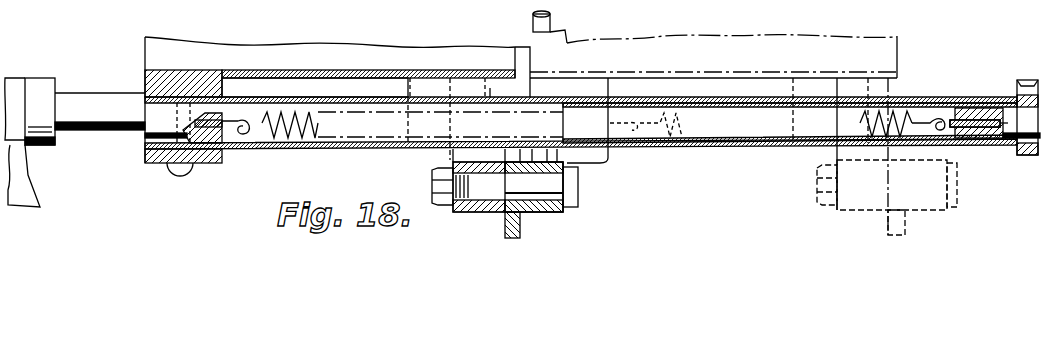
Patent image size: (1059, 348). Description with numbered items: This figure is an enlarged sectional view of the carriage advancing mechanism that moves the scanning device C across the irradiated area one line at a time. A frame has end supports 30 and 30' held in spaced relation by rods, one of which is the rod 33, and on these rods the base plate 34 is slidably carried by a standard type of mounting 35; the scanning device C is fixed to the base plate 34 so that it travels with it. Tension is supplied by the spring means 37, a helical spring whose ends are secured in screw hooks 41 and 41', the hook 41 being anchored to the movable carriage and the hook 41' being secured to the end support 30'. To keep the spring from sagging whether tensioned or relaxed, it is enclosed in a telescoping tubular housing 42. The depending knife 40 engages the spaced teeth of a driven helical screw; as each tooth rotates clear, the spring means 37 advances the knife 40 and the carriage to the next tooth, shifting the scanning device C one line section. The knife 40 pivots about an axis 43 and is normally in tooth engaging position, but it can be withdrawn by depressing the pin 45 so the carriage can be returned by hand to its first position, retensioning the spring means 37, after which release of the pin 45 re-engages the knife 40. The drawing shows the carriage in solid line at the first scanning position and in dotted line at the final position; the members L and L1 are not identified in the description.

The scanning device C is at (318, 47).
The casing member L is at (152, 49).
The casing member L1 is at (897, 47).
The base plate 34 is at (145, 82).
The rod 33 is at (111, 128).
The end support 30 is at (49, 143).
The mounting 35 is at (162, 160).
The screw hook 41 is at (233, 164).
The screw hook 41' is at (960, 91).
The spring means 37 is at (288, 138).
The telescoping tubular housing 42 is at (384, 149).
The pin 45 is at (533, 18).
The axis 43 is at (572, 183).
The knife 40 is at (505, 225).
The end support 30' is at (998, 89).